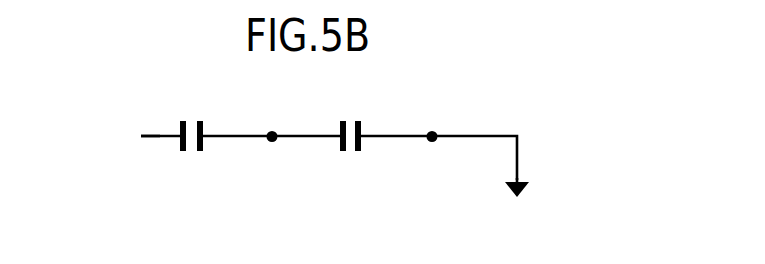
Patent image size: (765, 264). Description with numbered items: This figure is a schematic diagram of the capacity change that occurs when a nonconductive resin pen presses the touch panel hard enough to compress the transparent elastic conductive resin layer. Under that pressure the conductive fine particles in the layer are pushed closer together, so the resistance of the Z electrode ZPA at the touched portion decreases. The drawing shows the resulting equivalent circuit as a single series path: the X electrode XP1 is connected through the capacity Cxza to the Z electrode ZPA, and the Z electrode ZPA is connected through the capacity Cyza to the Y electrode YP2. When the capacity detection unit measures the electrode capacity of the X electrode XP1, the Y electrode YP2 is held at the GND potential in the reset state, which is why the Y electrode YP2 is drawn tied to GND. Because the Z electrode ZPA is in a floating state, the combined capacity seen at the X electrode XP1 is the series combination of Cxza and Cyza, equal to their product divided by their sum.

The X electrode XP1 is at (125, 135).
The capacity between Z electrode and X electrode Cxza is at (200, 155).
The Z electrode ZPA is at (277, 126).
The capacity between Z electrode and Y electrode Cyza is at (356, 155).
The Y electrode YP2 is at (438, 126).
The GND potential GND is at (516, 205).